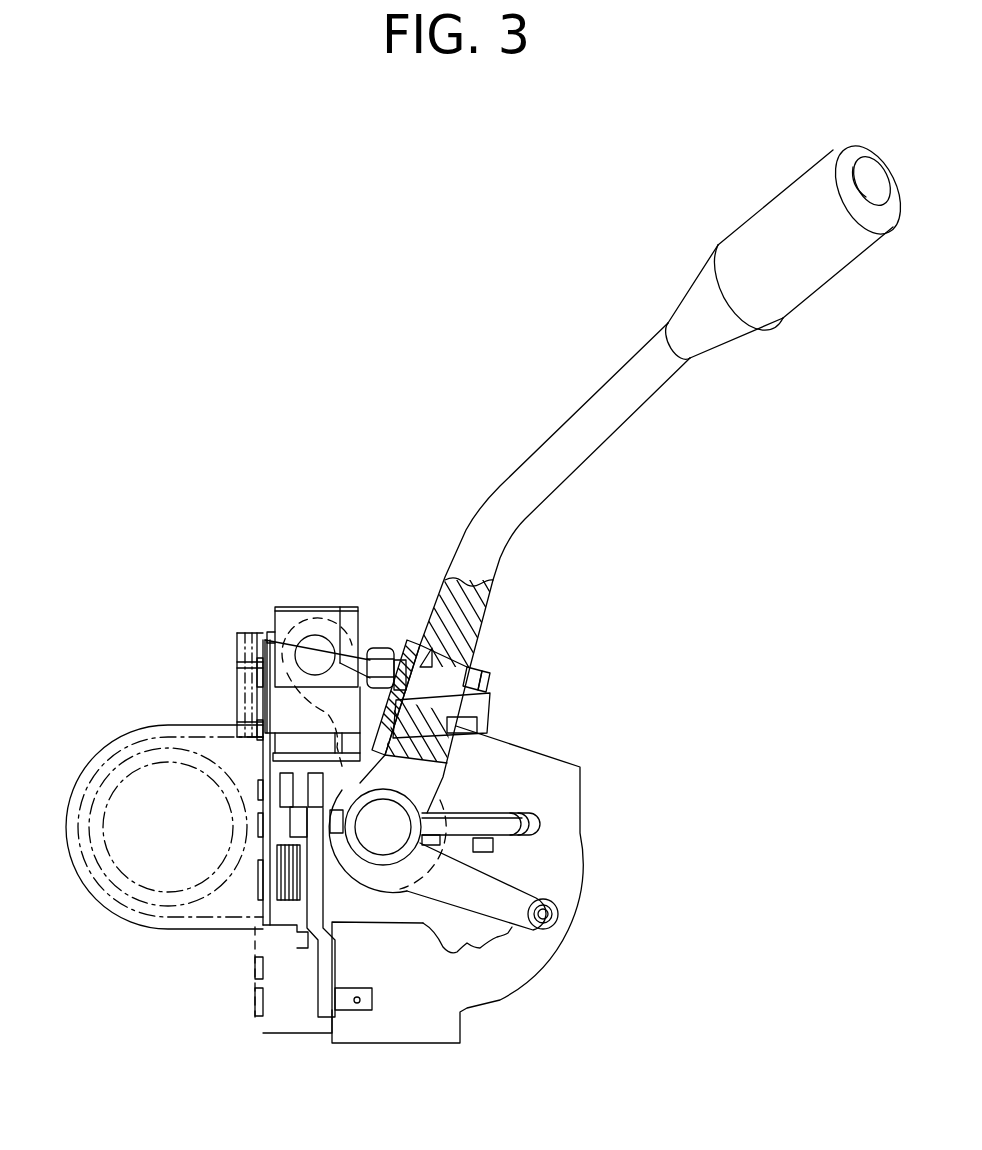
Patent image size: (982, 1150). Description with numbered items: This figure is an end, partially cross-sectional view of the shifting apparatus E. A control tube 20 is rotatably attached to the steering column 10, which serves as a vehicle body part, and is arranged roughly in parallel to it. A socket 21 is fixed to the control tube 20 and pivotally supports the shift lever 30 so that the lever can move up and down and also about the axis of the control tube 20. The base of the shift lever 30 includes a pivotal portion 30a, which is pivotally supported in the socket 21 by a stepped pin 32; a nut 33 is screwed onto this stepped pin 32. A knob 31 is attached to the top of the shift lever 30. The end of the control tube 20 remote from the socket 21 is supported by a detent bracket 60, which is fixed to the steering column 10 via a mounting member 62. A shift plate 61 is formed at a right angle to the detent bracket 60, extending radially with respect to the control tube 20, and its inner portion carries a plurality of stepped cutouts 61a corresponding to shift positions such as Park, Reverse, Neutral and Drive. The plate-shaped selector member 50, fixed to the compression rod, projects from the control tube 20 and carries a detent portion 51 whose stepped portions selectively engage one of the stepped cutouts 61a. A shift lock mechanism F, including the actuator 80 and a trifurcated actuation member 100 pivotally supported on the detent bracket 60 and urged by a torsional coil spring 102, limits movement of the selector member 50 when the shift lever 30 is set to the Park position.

The steering column 10 is at (120, 858).
The control tube 20 is at (383, 870).
The socket 21 is at (478, 752).
The shift lever 30 is at (553, 429).
The pivotal portion 30a is at (452, 634).
The knob 31 is at (778, 205).
The stepped pin 32 is at (452, 695).
The nut 33 is at (386, 645).
The selector member 50 is at (510, 839).
The detent portion 51 is at (526, 832).
The detent bracket 60 is at (265, 762).
The shift plate 61 is at (586, 833).
The stepped cutouts 61a is at (516, 930).
The mounting member 62 is at (287, 964).
The actuator 80 is at (313, 604).
The actuation member 100 is at (318, 1020).
The torsional coil spring 102 is at (289, 904).
The shifting apparatus E is at (355, 308).
The shift lock mechanism F is at (325, 976).